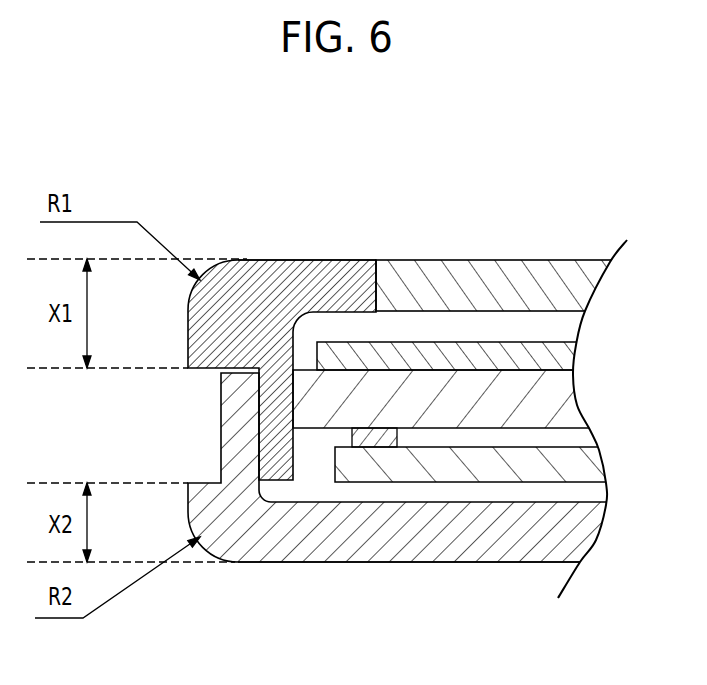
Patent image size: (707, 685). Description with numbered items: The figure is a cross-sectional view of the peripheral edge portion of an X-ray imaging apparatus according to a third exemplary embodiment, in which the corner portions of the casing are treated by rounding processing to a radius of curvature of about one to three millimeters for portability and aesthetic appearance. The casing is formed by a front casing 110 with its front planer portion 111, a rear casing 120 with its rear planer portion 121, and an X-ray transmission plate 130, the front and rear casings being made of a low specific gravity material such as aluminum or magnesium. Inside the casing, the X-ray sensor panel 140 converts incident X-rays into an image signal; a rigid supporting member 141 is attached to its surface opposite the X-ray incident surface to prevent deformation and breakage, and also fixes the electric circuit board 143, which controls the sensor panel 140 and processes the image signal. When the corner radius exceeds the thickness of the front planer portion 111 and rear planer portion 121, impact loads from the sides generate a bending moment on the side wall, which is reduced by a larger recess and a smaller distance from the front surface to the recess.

The front casing 110 is at (242, 262).
The front planer portion 111 is at (333, 268).
The rear casing 120 is at (255, 562).
The rear planer portion 121 is at (383, 562).
The X-ray transmission plate 130 is at (495, 270).
The X-ray sensor panel 140 is at (571, 355).
The rigid supporting member 141 is at (574, 398).
The electric circuit board 143 is at (592, 460).